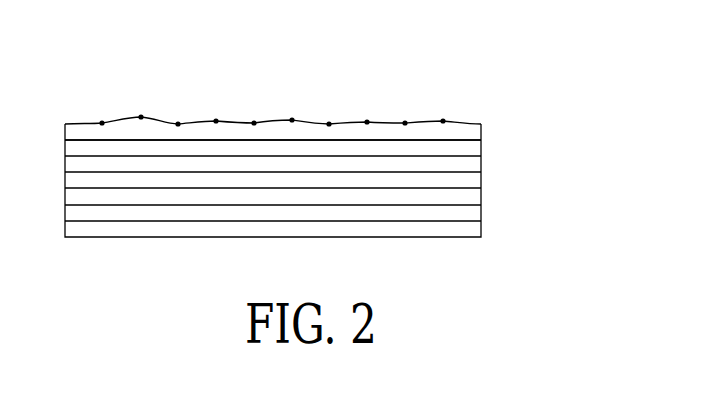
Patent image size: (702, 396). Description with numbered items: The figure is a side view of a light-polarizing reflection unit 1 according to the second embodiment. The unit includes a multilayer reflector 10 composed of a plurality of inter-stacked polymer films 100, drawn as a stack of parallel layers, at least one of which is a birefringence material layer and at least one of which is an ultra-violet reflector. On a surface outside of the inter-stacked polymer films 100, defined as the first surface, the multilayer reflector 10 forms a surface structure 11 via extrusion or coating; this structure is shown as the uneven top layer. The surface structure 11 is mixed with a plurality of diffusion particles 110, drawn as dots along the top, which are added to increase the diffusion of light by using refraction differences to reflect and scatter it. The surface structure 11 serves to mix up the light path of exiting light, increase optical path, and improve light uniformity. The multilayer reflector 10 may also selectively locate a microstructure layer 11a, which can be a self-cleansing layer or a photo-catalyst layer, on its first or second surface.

The light-polarizing reflection unit 1 is at (505, 67).
The multilayer reflector 10 is at (557, 166).
The inter-stacked polymer films 100 is at (490, 138).
The surface structure 11 is at (471, 131).
The diffusion particles 110 is at (443, 121).
The microstructure layer 11a is at (471, 231).